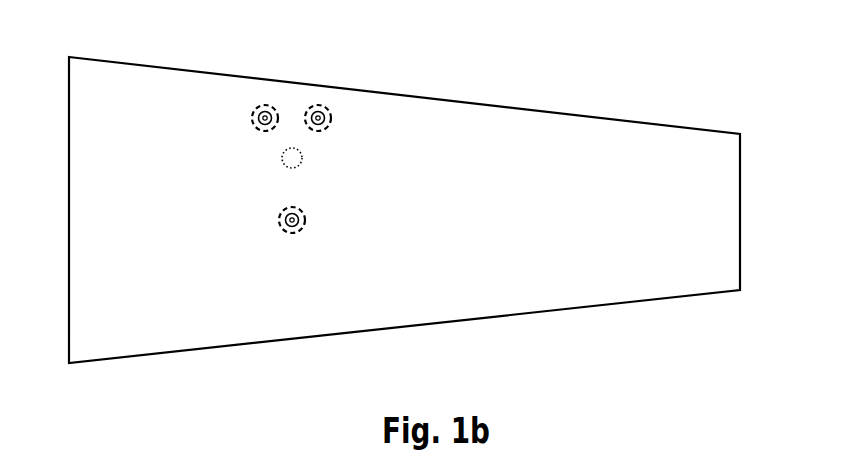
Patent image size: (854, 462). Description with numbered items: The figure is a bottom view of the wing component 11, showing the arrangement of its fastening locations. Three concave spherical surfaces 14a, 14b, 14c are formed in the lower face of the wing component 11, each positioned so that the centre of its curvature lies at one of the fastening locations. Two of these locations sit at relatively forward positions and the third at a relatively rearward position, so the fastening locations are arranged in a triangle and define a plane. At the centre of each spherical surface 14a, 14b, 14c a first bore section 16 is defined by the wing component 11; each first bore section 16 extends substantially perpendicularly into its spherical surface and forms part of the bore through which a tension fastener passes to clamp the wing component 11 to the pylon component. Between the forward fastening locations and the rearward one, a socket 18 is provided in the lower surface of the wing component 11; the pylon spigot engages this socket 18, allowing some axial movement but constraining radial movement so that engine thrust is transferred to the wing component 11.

The wing component 11 is at (449, 216).
The concave spherical surface 14a is at (269, 105).
The concave spherical surface 14b is at (327, 111).
The concave spherical surface 14c is at (300, 231).
The first bore section 16 is at (262, 113).
The socket 18 is at (292, 160).